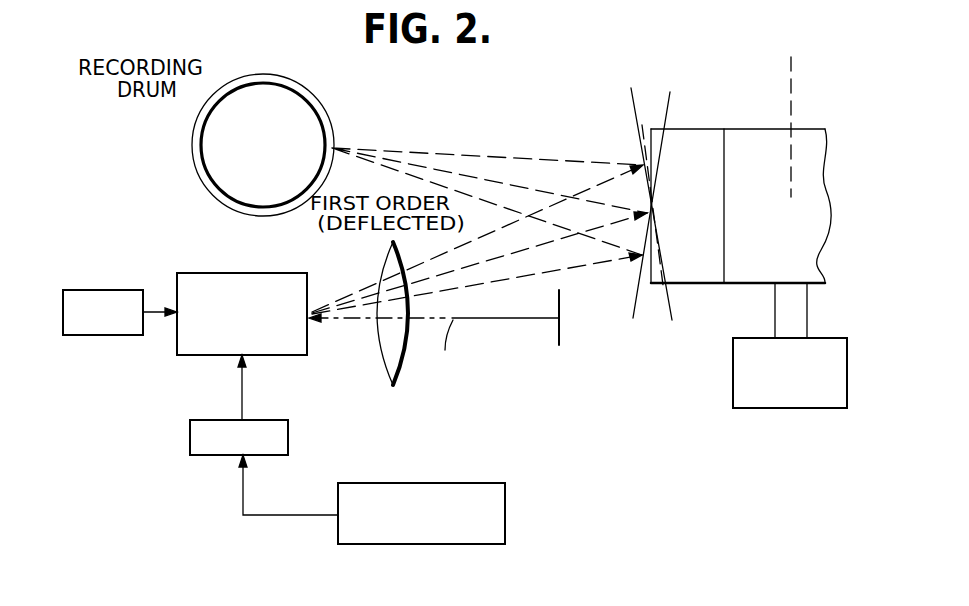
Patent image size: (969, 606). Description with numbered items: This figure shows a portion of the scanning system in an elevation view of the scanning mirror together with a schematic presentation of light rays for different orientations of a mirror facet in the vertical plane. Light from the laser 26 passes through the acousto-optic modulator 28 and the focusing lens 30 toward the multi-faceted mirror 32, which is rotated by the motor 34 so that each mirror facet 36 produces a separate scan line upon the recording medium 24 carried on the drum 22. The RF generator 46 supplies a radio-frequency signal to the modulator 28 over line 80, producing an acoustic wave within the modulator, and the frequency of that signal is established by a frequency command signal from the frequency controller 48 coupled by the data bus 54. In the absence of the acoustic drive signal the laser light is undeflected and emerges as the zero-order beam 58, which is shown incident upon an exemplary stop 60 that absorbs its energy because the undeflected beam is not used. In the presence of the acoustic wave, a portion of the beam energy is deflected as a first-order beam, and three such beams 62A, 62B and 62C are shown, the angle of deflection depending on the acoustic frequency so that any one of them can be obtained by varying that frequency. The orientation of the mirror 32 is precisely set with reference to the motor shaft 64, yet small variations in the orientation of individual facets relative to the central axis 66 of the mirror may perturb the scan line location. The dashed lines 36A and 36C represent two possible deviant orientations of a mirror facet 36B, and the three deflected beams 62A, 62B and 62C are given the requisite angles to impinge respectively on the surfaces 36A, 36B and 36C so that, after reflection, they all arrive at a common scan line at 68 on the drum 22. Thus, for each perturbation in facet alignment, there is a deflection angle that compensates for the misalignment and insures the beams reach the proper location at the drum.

The drum 22 is at (220, 165).
The recording medium 24 is at (195, 148).
The laser 26 is at (98, 290).
The acousto-optic modulator 28 is at (232, 273).
The lens 30 is at (387, 383).
The multi-faceted mirror 32 is at (761, 286).
The motor 34 is at (815, 410).
The mirror facet 36 is at (700, 152).
The deviant facet orientation 36A is at (667, 114).
The mirror facet 36B is at (643, 133).
The deviant facet orientation 36C is at (634, 118).
The RF generator 46 is at (190, 450).
The frequency controller 48 is at (417, 544).
The data bus 54 is at (311, 509).
The zero-order beam 58 is at (475, 318).
The stop 60 is at (587, 324).
The deflected beam 62A is at (567, 268).
The deflected beam 62B is at (540, 239).
The deflected beam 62C is at (478, 238).
The motor shaft 64 is at (797, 322).
The central axis 66 is at (792, 98).
The common scan line 68 is at (333, 147).
The line 80 is at (242, 395).